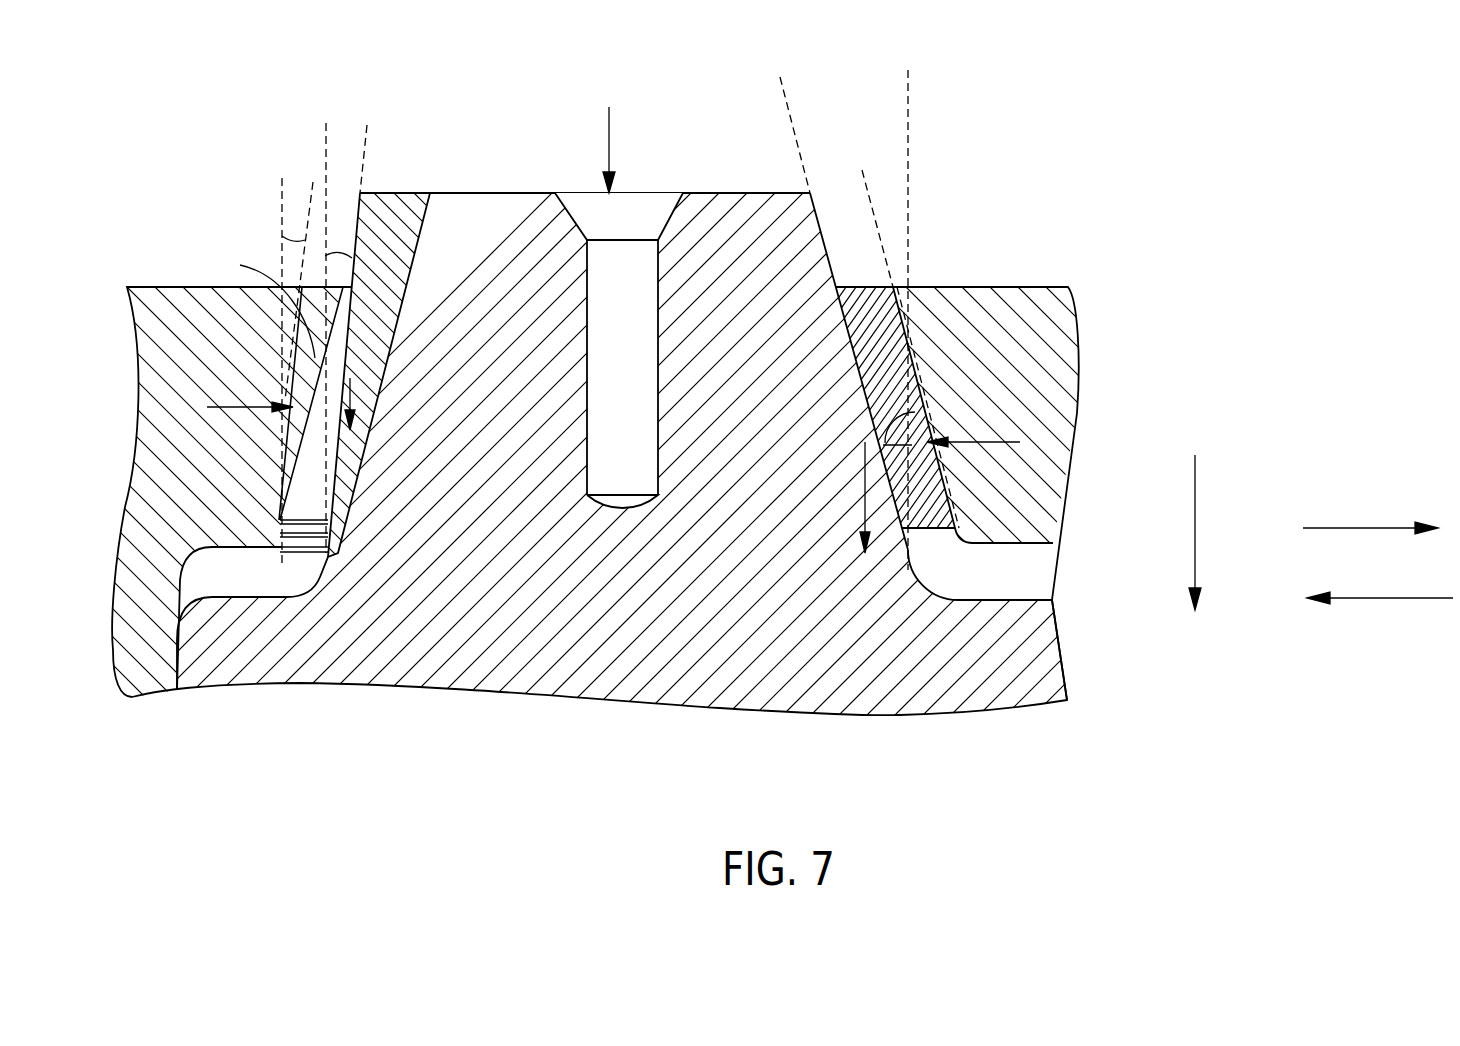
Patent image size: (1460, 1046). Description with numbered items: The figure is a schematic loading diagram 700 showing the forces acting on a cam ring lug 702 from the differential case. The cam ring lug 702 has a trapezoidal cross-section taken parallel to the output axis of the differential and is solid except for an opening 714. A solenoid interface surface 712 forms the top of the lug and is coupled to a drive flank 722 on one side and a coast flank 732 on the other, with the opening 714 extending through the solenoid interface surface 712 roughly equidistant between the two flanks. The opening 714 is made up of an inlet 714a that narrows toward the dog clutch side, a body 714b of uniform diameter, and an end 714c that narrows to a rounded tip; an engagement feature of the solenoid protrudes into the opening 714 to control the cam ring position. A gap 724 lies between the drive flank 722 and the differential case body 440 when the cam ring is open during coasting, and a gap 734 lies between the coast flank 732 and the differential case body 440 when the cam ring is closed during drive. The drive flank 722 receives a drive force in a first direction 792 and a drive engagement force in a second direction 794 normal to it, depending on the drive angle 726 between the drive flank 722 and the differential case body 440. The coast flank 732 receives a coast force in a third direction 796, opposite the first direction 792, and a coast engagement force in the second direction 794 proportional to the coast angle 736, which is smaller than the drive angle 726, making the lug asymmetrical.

The cutting tool assembly 700 is at (997, 101).
The cam ring lug 702 is at (380, 638).
The solenoid interface surface 712 is at (483, 193).
The opening 714 is at (640, 355).
The inlet 714a is at (683, 195).
The body 714b is at (658, 408).
The end 714c is at (612, 510).
The drive flank 722 is at (817, 250).
The gap 724 is at (875, 370).
The drive angle 726 is at (915, 412).
The coast flank 732 is at (390, 193).
The gap 734 is at (290, 456).
The coast angle 736 is at (343, 253).
The differential case body 440 is at (213, 507).
The first direction 792 is at (1388, 598).
The second direction 794 is at (1197, 523).
The third direction 796 is at (1333, 527).